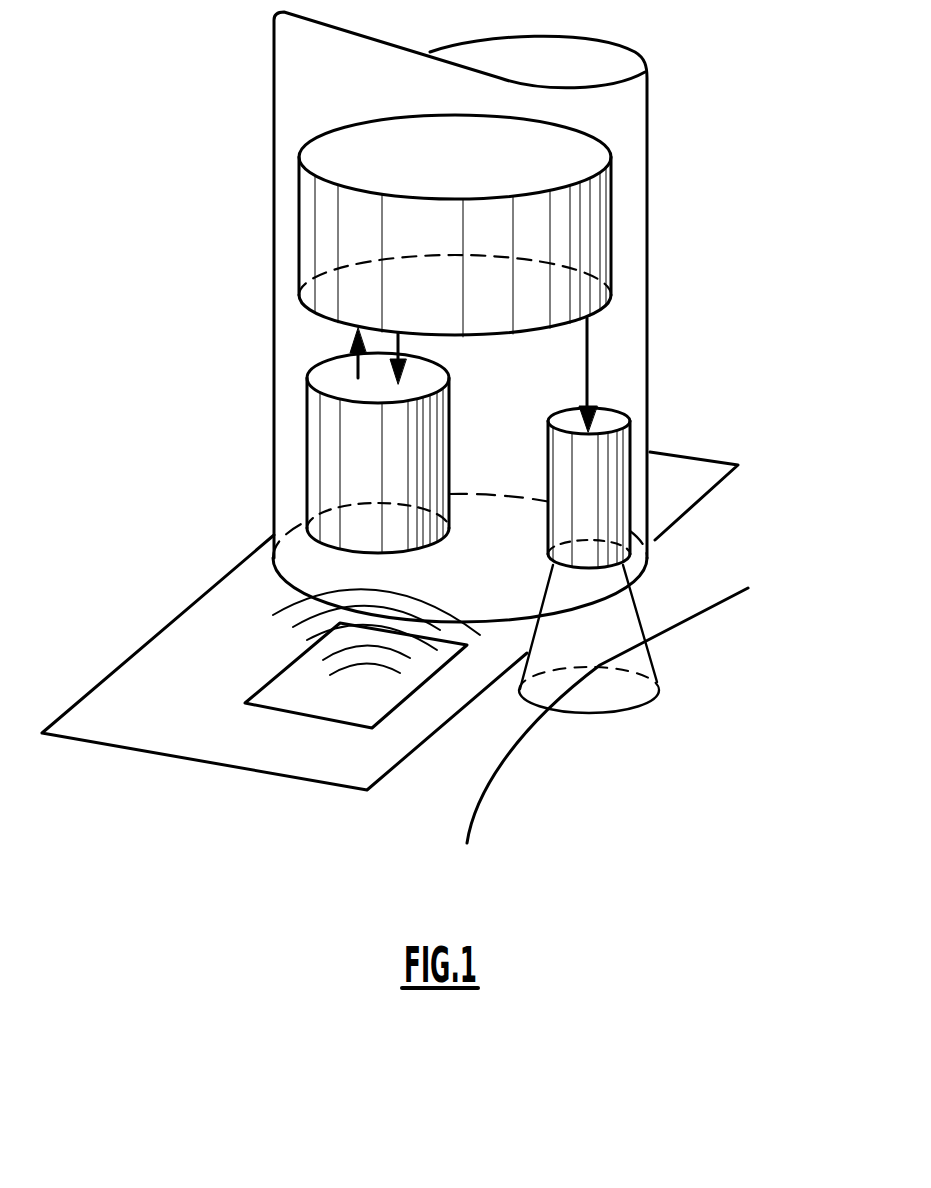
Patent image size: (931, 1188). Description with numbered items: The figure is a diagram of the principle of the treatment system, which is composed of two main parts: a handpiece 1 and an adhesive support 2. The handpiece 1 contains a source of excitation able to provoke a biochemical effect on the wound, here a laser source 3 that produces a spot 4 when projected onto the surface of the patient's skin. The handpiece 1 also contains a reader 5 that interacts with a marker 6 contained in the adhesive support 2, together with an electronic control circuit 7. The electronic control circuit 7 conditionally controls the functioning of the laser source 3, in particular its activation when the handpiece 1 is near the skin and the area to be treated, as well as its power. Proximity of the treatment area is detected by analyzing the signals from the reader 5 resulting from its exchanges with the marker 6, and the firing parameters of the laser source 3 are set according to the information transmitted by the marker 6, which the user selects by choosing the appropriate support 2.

The handpiece 1 is at (650, 226).
The adhesive support 2 is at (220, 633).
The laser source 3 is at (613, 458).
The spot 4 is at (640, 688).
The reader 5 is at (335, 443).
The marker 6 is at (287, 688).
The electronic control circuit 7 is at (560, 154).